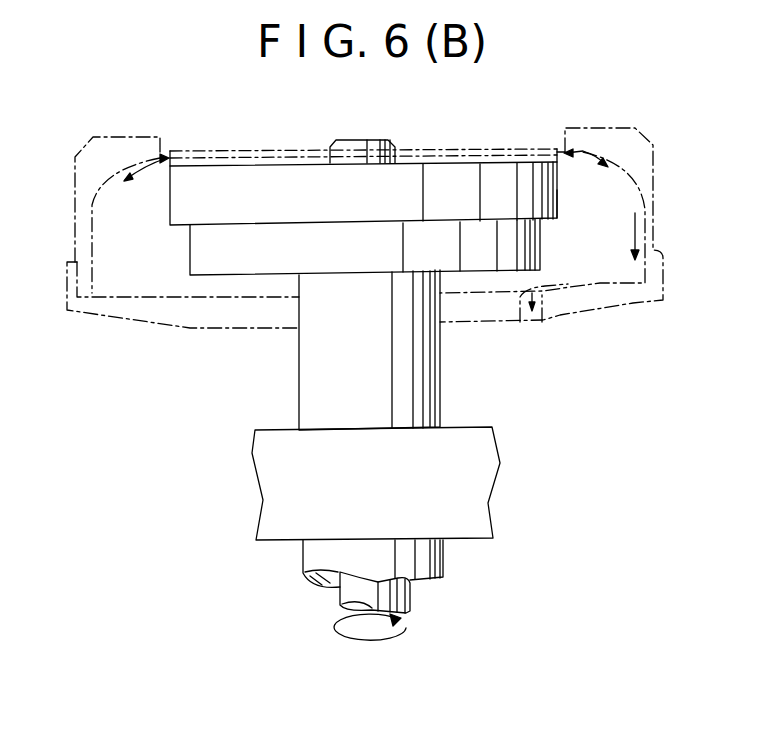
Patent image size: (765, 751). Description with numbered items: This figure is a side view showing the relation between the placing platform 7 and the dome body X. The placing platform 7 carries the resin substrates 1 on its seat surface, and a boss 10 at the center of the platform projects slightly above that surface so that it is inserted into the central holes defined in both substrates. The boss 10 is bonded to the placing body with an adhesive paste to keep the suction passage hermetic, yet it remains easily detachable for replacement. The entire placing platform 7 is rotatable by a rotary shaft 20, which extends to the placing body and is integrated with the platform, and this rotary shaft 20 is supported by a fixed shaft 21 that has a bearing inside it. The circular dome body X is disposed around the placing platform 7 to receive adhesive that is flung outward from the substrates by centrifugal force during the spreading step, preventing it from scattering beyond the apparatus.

The resin substrates 1 is at (413, 150).
The placing platform 7 is at (570, 218).
The boss 10 is at (350, 140).
The rotary shaft 20 is at (412, 592).
The fixed shaft 21 is at (310, 372).
The dome body X is at (640, 135).